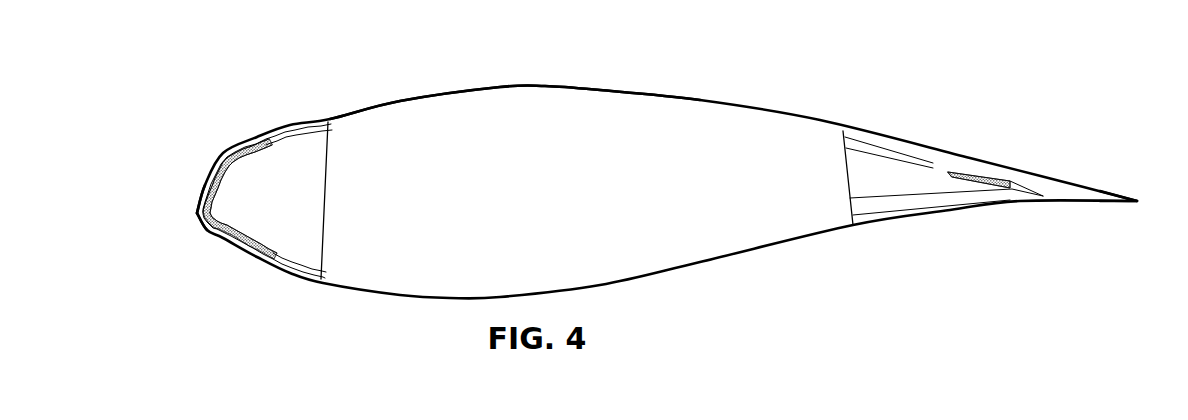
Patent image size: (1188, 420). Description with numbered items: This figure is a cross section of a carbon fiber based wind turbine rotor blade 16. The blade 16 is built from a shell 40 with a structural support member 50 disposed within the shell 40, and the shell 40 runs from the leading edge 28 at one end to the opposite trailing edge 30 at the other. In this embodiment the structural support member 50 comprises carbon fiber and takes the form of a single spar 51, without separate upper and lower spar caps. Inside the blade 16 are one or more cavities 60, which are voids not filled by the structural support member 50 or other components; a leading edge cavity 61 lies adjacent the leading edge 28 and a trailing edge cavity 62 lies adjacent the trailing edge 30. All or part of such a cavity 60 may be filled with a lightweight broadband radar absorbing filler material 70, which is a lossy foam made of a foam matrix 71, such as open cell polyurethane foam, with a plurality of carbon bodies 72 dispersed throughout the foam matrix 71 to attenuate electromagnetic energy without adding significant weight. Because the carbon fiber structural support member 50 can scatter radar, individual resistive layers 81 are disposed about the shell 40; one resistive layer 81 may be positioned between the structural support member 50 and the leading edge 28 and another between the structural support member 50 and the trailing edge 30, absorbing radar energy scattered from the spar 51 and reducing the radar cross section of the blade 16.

The wind turbine rotor blade 16 is at (877, 67).
The leading edge 28 is at (192, 213).
The trailing edge 30 is at (1137, 203).
The shell 40 is at (237, 167).
The structural support member 50 is at (862, 168).
The spar 51 is at (545, 86).
The cavity 60 is at (298, 150).
The leading edge cavity 61 is at (240, 213).
The trailing edge cavity 62 is at (940, 184).
The lightweight broadband radar absorbing filler material 70 is at (266, 183).
The foam matrix 71 is at (253, 163).
The carbon bodies 72 is at (233, 187).
The individual resistive layer 81 is at (308, 132).